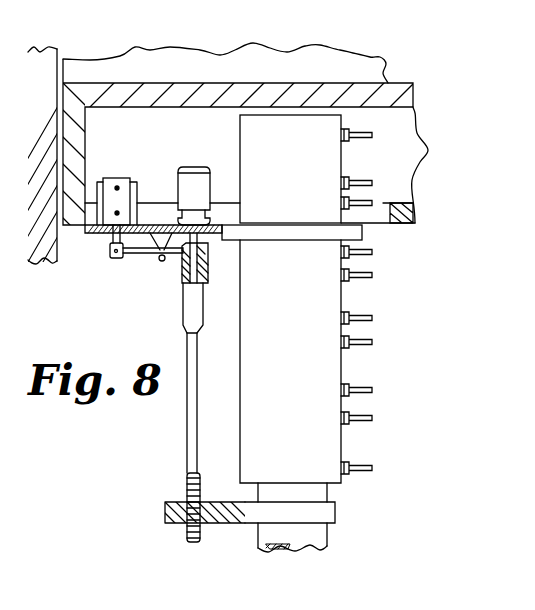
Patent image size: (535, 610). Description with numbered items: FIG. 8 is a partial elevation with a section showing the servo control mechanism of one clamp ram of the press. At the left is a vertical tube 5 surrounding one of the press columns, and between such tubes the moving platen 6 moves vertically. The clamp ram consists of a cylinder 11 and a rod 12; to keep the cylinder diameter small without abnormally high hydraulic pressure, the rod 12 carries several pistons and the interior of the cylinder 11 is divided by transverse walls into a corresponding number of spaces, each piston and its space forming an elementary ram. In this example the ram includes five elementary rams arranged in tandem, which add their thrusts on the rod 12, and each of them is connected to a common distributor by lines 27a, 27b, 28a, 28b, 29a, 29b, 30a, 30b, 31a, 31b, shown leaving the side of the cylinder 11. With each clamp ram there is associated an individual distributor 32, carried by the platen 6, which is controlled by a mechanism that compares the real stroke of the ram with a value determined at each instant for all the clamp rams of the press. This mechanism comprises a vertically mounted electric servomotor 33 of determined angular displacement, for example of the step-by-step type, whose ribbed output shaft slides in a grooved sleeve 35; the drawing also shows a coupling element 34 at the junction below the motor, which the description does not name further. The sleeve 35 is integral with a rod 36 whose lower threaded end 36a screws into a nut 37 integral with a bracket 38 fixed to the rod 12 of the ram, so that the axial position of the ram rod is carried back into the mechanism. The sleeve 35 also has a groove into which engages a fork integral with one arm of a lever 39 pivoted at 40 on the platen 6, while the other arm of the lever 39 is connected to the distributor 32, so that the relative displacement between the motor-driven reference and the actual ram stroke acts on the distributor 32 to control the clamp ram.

The vertical tube 5 is at (43, 48).
The moving platen 6 is at (148, 93).
The cylinder of the clamp ram 11 is at (282, 123).
The rod of the clamp ram 12 is at (310, 535).
The line 27a is at (362, 137).
The line 27b is at (360, 180).
The line 28a is at (367, 197).
The line 28b is at (367, 247).
The line 29a is at (368, 280).
The line 29b is at (363, 315).
The line 30a is at (363, 343).
The line 30b is at (365, 390).
The line 31a is at (365, 420).
The line 31b is at (365, 470).
The individual distributor 32 is at (114, 182).
The electric servomotor 33 is at (200, 187).
The threaded nut 34 is at (205, 275).
The grooved sleeve 35 is at (185, 307).
The rod 36 is at (190, 419).
The threaded end 36a is at (190, 537).
The nut 37 is at (183, 502).
The bracket 38 is at (250, 515).
The lever 39 is at (128, 256).
The pivot 40 is at (160, 247).